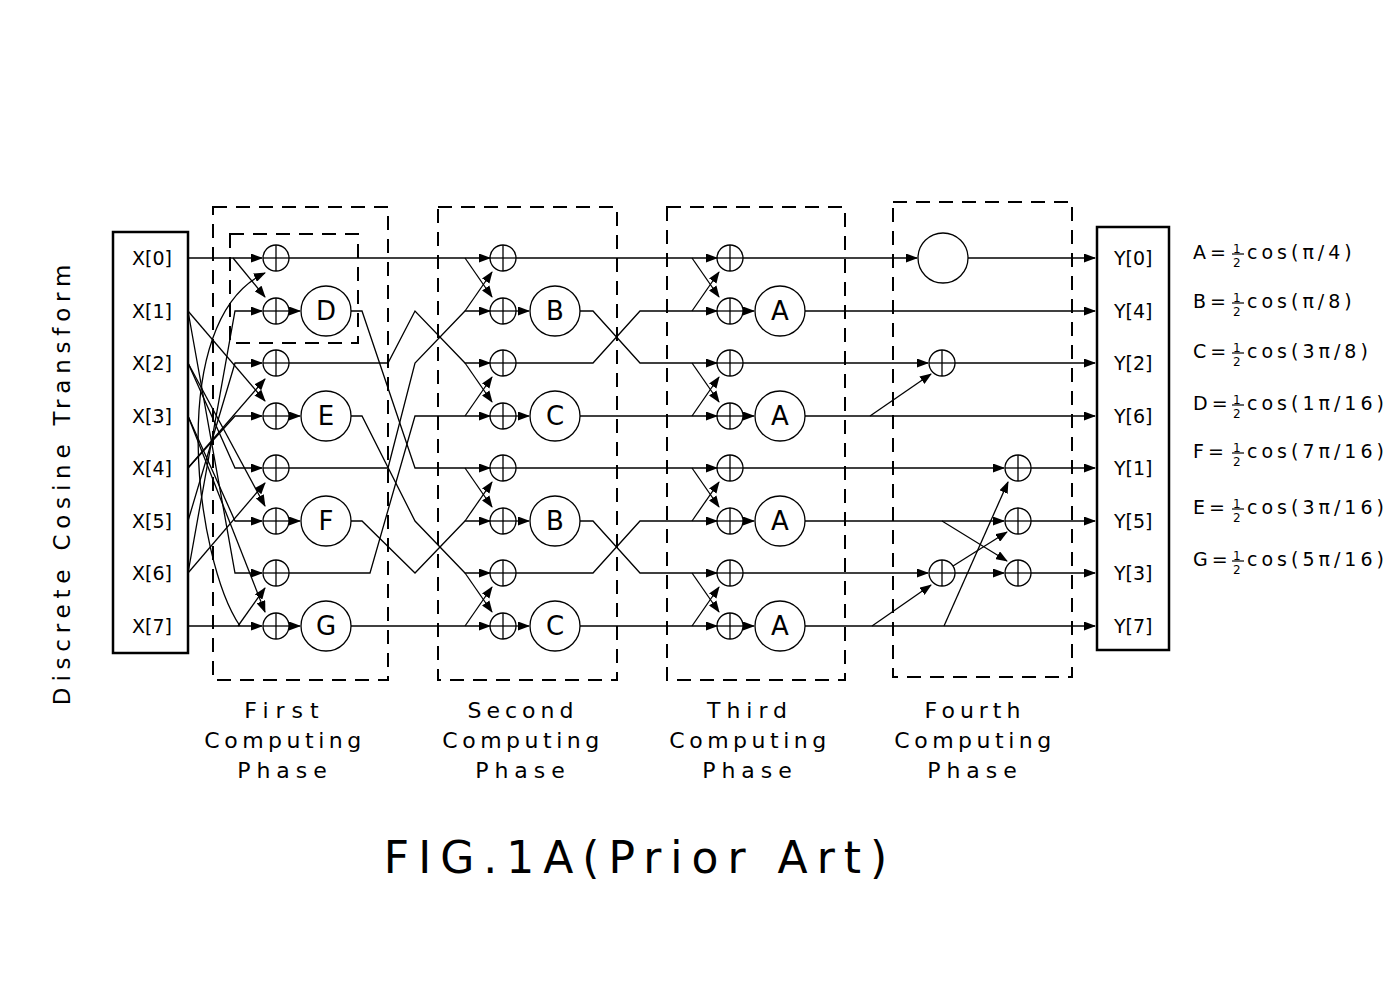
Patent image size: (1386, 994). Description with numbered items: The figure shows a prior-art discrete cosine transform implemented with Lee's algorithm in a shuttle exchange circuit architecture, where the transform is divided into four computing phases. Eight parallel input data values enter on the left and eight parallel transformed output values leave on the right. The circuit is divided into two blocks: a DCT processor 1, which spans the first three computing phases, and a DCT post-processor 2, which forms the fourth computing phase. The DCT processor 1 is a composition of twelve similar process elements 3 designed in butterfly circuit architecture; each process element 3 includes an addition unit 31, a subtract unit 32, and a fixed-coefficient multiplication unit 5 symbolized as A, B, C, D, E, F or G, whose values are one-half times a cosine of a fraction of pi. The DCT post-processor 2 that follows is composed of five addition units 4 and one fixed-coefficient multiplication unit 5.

The DCT processor 1 is at (978, 168).
The DCT post-processor 2 is at (978, 168).
The process element 3 is at (357, 235).
The addition unit 31 is at (279, 240).
The subtract unit 32 is at (262, 295).
The addition unit 4 is at (953, 349).
The fixed-coefficient multiplication unit 5 is at (944, 232).